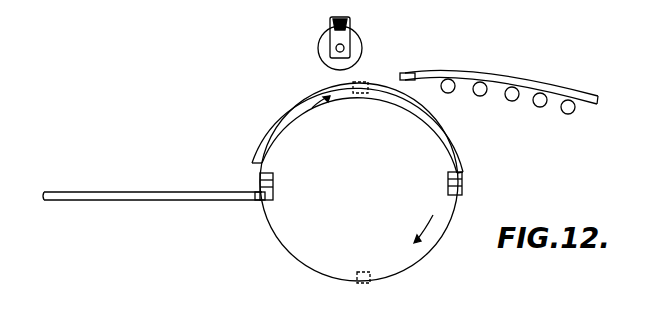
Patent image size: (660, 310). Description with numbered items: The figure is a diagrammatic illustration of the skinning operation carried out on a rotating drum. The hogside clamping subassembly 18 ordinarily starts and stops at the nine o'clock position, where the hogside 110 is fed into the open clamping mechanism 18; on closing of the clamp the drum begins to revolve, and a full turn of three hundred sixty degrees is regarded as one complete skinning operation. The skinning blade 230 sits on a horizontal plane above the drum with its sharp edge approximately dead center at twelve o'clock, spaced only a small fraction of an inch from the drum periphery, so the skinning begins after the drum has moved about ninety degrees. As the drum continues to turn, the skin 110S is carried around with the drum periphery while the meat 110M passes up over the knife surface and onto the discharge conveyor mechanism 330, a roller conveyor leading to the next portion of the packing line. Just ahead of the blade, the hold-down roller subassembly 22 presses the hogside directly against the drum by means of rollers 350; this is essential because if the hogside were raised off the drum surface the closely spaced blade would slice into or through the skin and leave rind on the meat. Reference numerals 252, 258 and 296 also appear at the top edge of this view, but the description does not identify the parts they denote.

The hogside clamping subassembly 18 is at (260, 179).
The hold-down roller subassembly 22 is at (348, 17).
The hogside 110 is at (149, 160).
The meat 110M is at (480, 75).
The skin 110S is at (462, 143).
The skinning blade 230 is at (407, 74).
The discharge conveyor mechanism 330 is at (545, 98).
The rollers 350 is at (325, 50).
The partial numeral from adjacent figure 252 is at (148, 25).
The partial numeral from adjacent figure 258 is at (151, 9).
The partial numeral from adjacent figure 296 is at (197, 0).